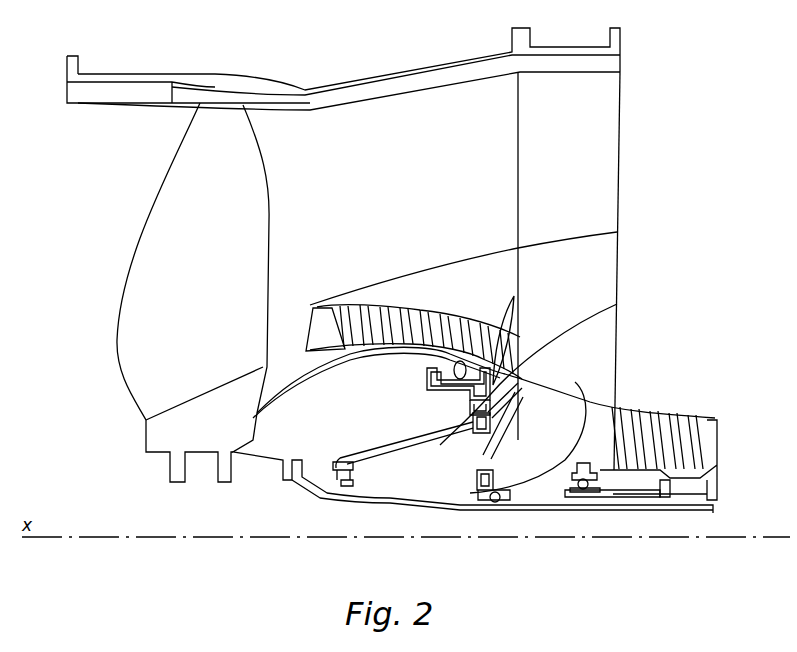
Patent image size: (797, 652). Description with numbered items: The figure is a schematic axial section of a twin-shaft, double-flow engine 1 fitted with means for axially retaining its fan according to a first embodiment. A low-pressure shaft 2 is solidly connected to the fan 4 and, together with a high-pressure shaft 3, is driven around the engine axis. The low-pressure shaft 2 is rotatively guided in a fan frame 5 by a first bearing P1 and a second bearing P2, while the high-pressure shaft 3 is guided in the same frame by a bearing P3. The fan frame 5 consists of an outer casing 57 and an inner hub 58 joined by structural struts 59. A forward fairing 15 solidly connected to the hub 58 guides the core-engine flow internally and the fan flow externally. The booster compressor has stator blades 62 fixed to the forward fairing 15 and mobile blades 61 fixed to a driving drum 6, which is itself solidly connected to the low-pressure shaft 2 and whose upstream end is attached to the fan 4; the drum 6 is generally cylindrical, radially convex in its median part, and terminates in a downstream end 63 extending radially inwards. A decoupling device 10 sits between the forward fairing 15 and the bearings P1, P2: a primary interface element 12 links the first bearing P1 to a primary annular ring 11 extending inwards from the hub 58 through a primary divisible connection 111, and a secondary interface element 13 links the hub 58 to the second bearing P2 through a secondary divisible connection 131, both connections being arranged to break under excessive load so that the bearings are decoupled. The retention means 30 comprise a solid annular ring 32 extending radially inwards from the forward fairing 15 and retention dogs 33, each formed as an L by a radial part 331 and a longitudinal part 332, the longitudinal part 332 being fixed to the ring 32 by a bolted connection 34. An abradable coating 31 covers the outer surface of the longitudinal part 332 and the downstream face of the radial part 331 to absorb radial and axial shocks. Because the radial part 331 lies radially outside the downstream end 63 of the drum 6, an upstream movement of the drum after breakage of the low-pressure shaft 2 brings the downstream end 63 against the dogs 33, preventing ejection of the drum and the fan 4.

The twin-shaft engine 1 is at (92, 167).
The low-pressure shaft 2 is at (310, 485).
The high-pressure shaft 3 is at (657, 497).
The fan 4 is at (150, 270).
The fan frame 5 is at (687, 72).
The driving drum 6 is at (277, 400).
The decoupling device 10 is at (570, 385).
The primary annular ring 11 is at (496, 430).
The primary interface element 12 is at (358, 457).
The secondary interface element 13 is at (497, 443).
The forward fairing 15 is at (423, 290).
The retention means 30 is at (617, 306).
The abradable coating 31 is at (458, 358).
The solid annular ring 32 is at (497, 380).
The retention dog 33 is at (417, 398).
The connection 34 is at (500, 390).
The outer casing 57 is at (608, 67).
The hub 58 is at (602, 277).
The structural struts 59 is at (598, 170).
The mobile blades 61 is at (357, 320).
The stator blades 62 is at (323, 335).
The downstream end 63 is at (512, 298).
The primary divisible connection 111 is at (477, 433).
The secondary divisible connection 131 is at (480, 480).
The radial part 331 is at (436, 373).
The longitudinal part 332 is at (463, 395).
The first bearing P1 is at (343, 487).
The second bearing P2 is at (495, 507).
The third bearing P3 is at (583, 492).